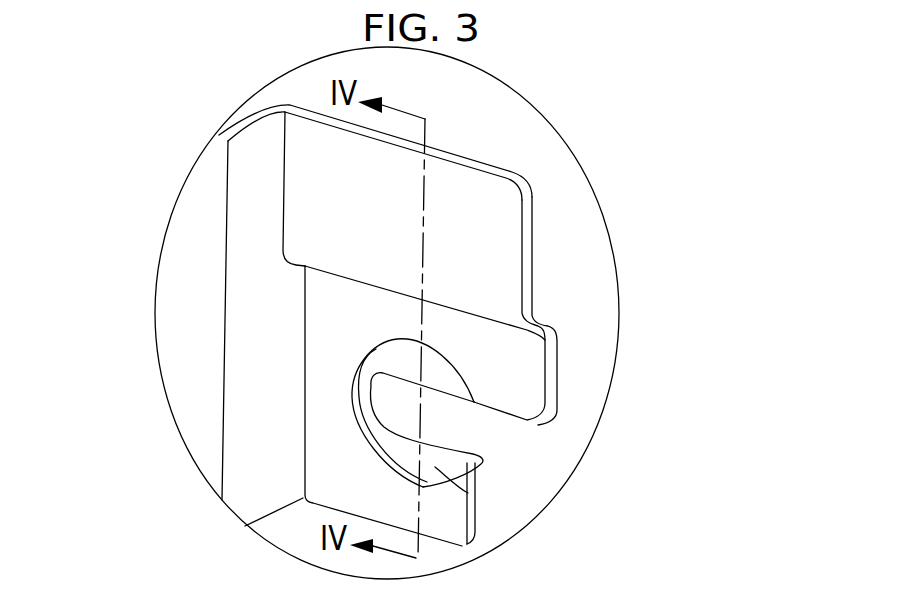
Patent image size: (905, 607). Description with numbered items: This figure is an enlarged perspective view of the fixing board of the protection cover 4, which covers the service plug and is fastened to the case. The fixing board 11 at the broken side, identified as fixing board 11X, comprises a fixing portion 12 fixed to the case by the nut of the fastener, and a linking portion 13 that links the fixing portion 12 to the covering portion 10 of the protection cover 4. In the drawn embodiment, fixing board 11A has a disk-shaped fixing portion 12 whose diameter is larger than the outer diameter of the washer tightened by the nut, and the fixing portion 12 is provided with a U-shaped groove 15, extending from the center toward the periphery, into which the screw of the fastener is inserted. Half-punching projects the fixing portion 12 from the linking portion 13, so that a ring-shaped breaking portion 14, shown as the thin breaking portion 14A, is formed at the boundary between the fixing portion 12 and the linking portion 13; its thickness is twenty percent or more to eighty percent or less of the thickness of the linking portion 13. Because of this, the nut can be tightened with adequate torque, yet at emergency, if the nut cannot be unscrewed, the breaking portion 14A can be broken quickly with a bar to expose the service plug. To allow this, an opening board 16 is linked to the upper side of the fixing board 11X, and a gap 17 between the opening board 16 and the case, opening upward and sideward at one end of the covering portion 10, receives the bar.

The protection cover 4 is at (173, 250).
The covering portion 10 is at (177, 323).
The fixing board 11 is at (572, 423).
The fixing board at the broken side 11X is at (572, 423).
The fixing board 11A is at (572, 423).
The fixing portion 12 is at (476, 494).
The linking portion 13 is at (438, 508).
The breaking portion 14 is at (360, 421).
The thin breaking portion 14A is at (407, 445).
The U-shaped groove 15 is at (455, 416).
The opening board 16 is at (458, 187).
The gap 17 is at (545, 242).